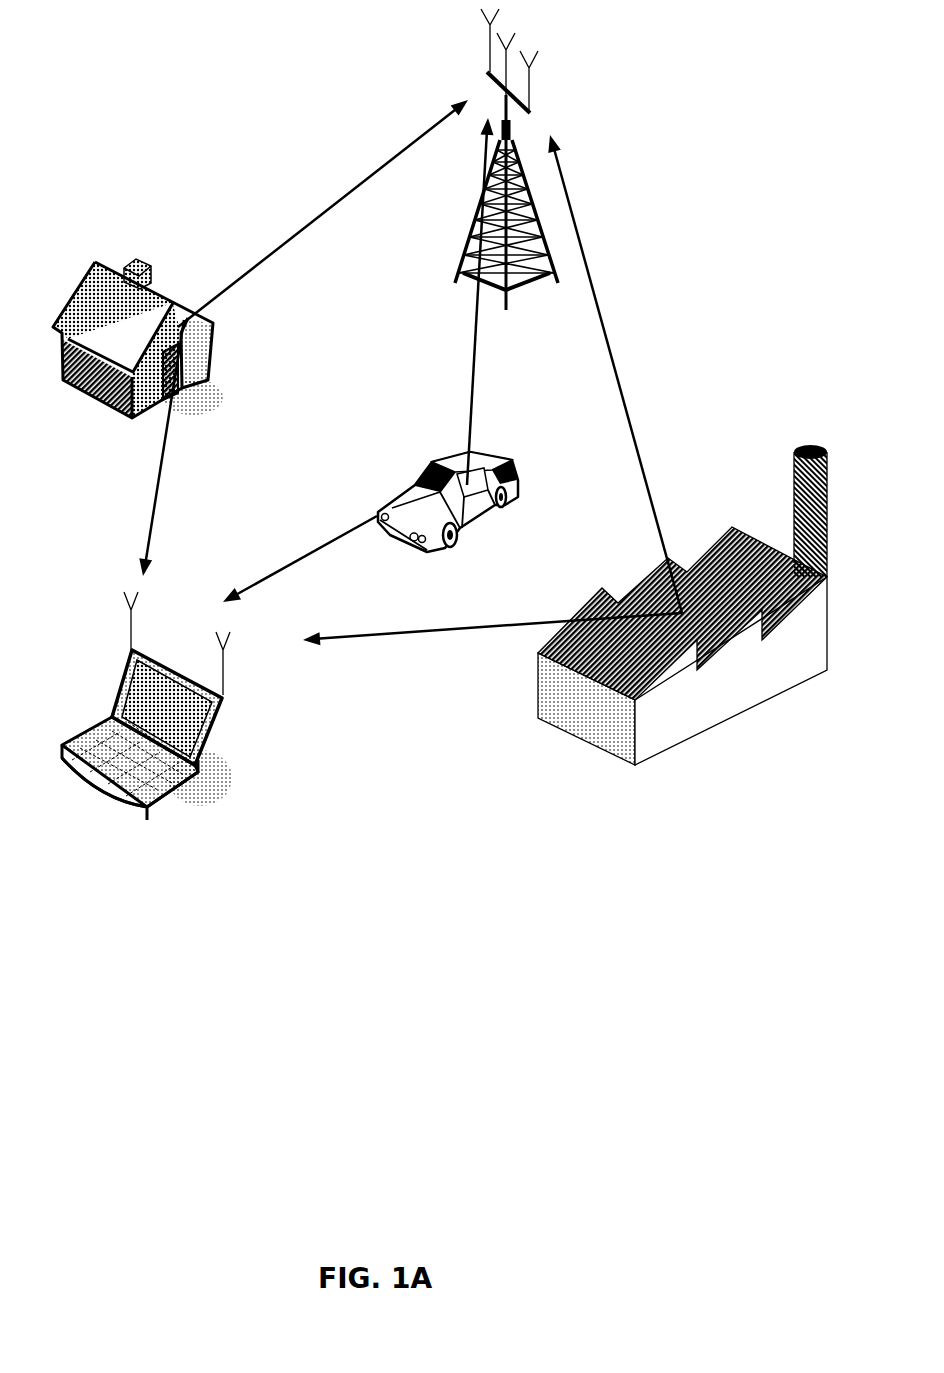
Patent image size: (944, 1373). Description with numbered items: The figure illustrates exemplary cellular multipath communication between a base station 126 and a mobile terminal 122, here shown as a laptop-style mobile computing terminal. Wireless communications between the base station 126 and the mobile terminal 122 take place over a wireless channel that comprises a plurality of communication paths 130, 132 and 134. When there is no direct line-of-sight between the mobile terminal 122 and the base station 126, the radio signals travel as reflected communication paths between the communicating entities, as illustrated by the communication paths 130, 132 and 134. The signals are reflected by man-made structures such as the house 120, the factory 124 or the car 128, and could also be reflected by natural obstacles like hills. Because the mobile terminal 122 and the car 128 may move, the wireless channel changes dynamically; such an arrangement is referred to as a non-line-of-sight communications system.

The house 120 is at (98, 262).
The mobile terminal 122 is at (217, 722).
The factory 124 is at (652, 755).
The base station 126 is at (507, 310).
The car 128 is at (452, 546).
The communication path 130 is at (268, 258).
The communication path 132 is at (473, 400).
The communication path 134 is at (617, 375).